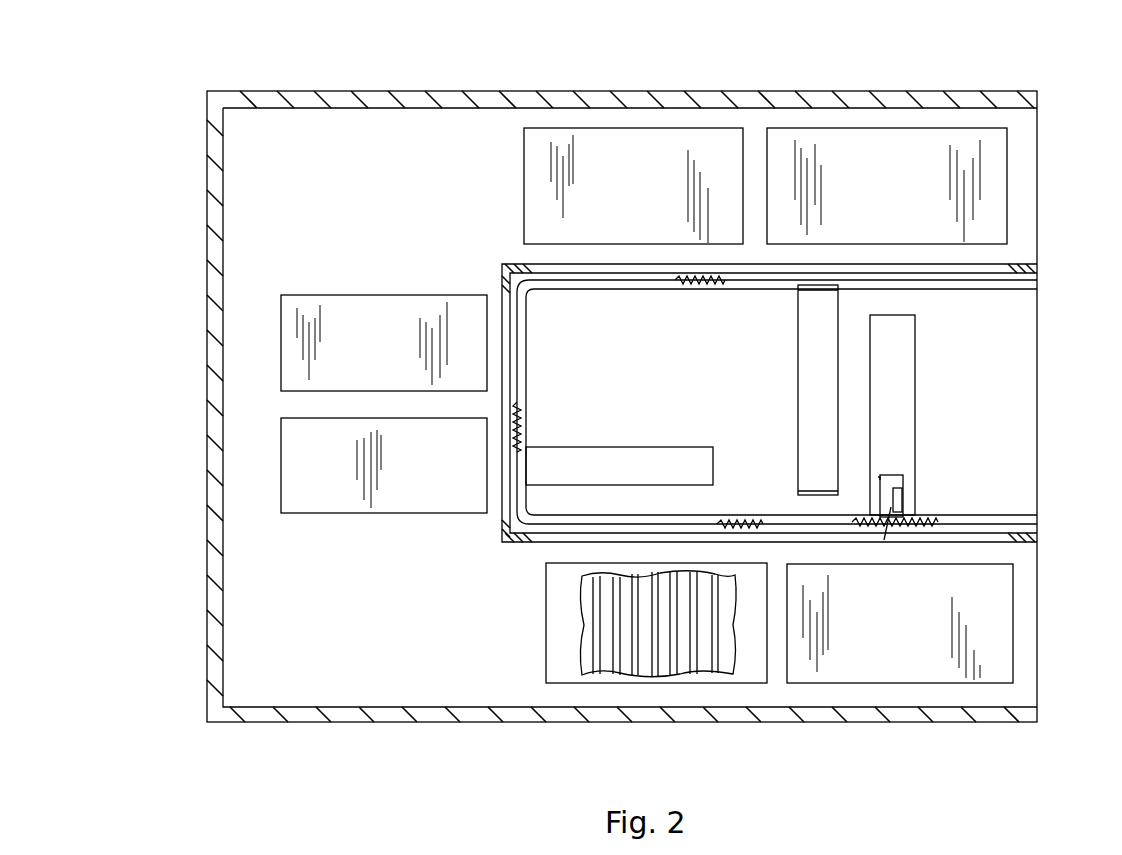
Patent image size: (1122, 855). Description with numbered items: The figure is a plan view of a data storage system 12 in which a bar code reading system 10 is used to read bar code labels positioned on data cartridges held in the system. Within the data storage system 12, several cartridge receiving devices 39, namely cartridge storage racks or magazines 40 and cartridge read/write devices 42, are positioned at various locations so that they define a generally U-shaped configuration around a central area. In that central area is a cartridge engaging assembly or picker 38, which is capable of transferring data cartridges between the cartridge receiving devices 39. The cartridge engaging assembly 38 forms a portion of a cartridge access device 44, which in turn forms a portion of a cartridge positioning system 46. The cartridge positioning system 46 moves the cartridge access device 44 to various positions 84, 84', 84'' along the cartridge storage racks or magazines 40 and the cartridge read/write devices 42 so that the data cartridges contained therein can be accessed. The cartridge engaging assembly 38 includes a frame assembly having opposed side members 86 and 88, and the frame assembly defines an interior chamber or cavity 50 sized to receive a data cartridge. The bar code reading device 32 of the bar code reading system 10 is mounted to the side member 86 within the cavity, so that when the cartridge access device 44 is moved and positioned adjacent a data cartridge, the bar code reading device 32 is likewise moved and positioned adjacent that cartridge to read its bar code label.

The bar code reading system 10 is at (138, 60).
The data storage system 12 is at (290, 90).
The bar code reading device 32 is at (907, 496).
The cartridge engaging assembly 38 is at (932, 406).
The cartridge receiving devices 39 is at (544, 600).
The cartridge storage racks or magazines 40 is at (738, 127).
The cartridge read/write devices 42 is at (300, 418).
The cartridge access device 44 is at (929, 406).
The cartridge positioning system 46 is at (1006, 510).
The interior chamber or cavity 50 is at (884, 540).
The position 84 is at (929, 415).
The position 84' is at (619, 443).
The position 84'' is at (784, 390).
The side member 86 is at (915, 450).
The side member 88 is at (878, 477).